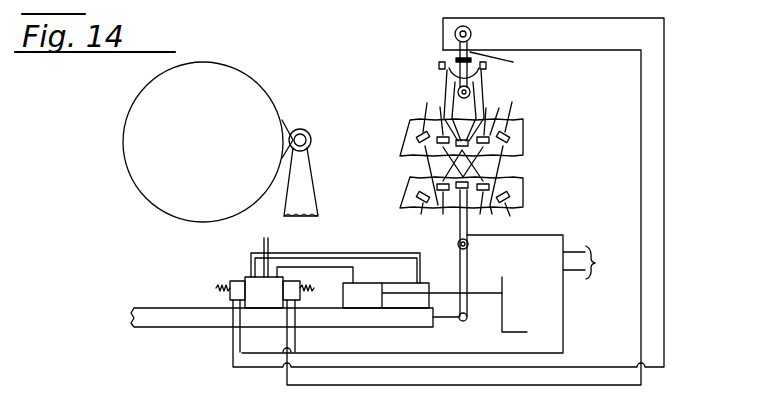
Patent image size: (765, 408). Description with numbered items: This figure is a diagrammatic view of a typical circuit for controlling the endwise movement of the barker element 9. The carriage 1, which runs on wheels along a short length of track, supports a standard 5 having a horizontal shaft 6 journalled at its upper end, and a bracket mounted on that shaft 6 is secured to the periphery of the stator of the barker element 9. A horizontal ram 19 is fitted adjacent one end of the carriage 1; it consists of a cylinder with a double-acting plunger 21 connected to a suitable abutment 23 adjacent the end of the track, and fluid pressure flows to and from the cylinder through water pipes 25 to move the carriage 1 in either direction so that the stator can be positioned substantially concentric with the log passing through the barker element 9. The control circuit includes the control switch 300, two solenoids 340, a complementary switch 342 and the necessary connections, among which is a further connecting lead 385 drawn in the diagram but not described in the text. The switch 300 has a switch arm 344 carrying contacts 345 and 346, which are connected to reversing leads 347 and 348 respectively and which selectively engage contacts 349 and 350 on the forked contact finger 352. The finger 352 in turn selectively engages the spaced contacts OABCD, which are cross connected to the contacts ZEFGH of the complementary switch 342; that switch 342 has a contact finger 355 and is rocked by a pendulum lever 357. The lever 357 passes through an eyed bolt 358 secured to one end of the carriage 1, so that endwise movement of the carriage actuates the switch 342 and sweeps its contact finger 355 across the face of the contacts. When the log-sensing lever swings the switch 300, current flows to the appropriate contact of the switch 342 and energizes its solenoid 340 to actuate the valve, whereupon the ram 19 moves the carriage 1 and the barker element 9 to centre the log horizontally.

The carriage 1 is at (180, 320).
The standard 5 is at (305, 176).
The horizontal shaft 6 is at (312, 138).
The barker element 9 is at (270, 102).
The horizontal ram 19 is at (400, 285).
The double-acting plunger 21 is at (459, 280).
The abutment 23 is at (502, 306).
The water pipes 25 is at (345, 262).
The control switch 300 is at (530, 148).
The solenoid 340 is at (230, 283).
The complementary switch 342 is at (530, 201).
The switch arm 344 is at (472, 33).
The contact 345 is at (506, 61).
The contact 346 is at (455, 50).
The reversing lead 347 is at (641, 108).
The reversing lead 348 is at (664, 135).
The contact 349 is at (486, 70).
The contact 350 is at (440, 73).
The forked contact finger 352 is at (478, 78).
The contact finger 355 is at (457, 231).
The pendulum lever 357 is at (468, 263).
The eyed bolt 358 is at (448, 318).
The conductor 385 is at (455, 33).